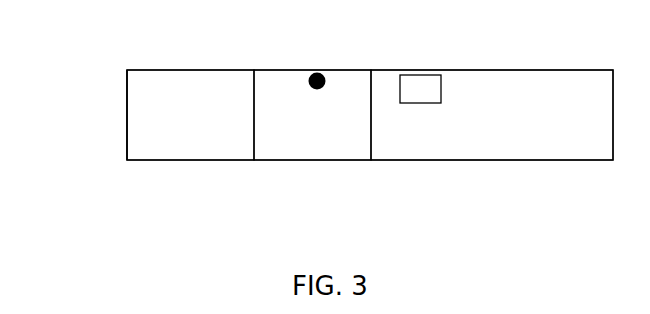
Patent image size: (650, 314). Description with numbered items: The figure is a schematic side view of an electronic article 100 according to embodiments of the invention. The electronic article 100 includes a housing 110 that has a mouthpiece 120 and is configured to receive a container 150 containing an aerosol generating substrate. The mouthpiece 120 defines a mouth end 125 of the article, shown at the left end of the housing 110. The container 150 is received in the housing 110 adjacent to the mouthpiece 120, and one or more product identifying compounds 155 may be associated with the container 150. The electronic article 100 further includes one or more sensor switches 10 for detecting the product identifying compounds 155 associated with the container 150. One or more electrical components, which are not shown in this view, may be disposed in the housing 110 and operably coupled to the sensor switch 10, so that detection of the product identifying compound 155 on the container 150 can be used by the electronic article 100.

The electronic article 100 is at (141, 54).
The housing 110 is at (519, 69).
The mouthpiece 120 is at (188, 162).
The mouth end 125 is at (120, 128).
The container 150 is at (312, 162).
The product identifying compound 155 is at (315, 73).
The sensor switch 10 is at (419, 78).